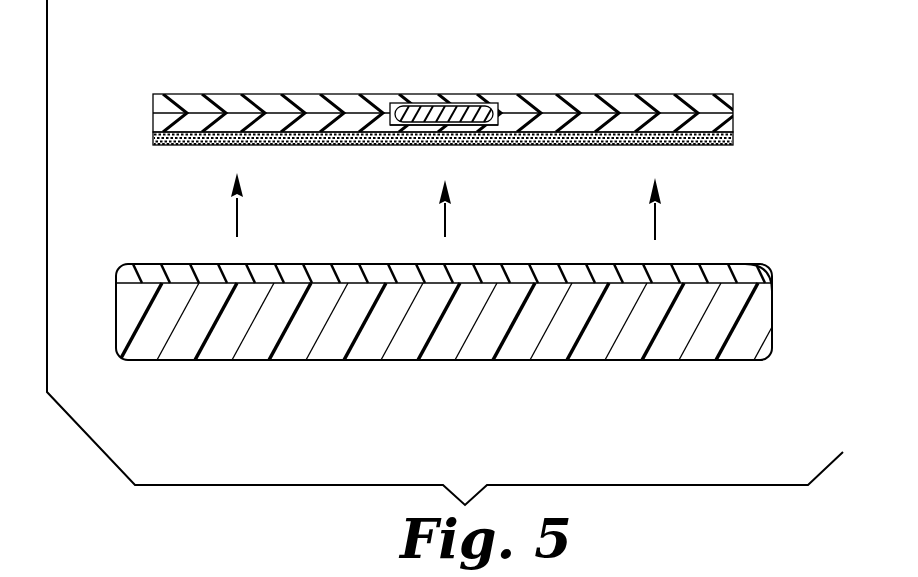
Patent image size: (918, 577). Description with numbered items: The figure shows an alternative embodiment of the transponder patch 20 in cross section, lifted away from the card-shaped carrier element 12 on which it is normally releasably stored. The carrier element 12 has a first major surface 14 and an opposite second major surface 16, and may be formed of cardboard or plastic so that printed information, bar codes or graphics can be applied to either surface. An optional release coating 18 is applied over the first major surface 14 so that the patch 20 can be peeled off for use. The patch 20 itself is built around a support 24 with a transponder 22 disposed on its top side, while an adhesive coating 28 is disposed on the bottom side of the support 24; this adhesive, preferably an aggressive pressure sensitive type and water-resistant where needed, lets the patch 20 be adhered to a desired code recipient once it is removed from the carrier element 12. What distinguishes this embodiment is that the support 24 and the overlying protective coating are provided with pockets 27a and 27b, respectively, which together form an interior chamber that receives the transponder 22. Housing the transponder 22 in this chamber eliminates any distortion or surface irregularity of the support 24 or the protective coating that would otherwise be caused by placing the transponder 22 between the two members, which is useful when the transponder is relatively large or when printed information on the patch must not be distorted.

The carrier element 12 is at (476, 320).
The first major surface 14 is at (593, 283).
The second major surface 16 is at (583, 362).
The release coating 18 is at (760, 268).
The transponder patch 20 is at (433, 100).
The transponder 22 is at (430, 108).
The support 24 is at (158, 121).
The pocket 27a is at (498, 110).
The pocket 27b is at (390, 122).
The adhesive coating 28 is at (716, 140).